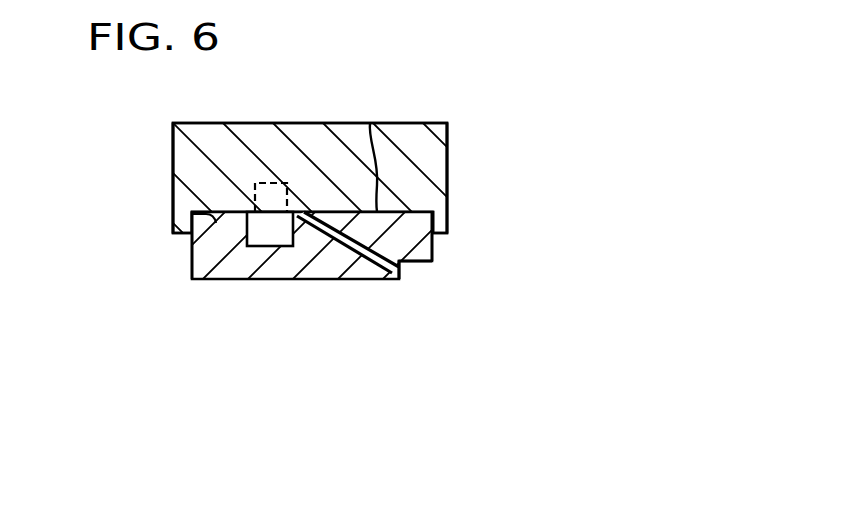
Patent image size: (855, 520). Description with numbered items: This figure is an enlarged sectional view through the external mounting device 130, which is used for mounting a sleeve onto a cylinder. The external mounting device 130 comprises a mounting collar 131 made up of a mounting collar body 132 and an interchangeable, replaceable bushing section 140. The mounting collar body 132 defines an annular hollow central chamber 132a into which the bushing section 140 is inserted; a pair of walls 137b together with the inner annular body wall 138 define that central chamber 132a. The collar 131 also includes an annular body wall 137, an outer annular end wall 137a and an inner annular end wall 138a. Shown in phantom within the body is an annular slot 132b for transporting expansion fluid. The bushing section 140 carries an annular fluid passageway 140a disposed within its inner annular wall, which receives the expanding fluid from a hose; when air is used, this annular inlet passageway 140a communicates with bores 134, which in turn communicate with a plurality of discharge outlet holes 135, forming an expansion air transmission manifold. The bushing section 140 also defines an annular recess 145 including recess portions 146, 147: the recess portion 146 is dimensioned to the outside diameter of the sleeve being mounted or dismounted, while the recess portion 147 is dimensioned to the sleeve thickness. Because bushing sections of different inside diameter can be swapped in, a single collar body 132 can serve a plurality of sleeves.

The external mounting device 130 is at (180, 376).
The mounting collar 131 is at (408, 107).
The mounting collar body 132 is at (260, 127).
The annular hollow central chamber 132a is at (188, 224).
The annular slot 132b is at (286, 183).
The bores 134 is at (338, 280).
The discharge outlet holes 135 is at (395, 274).
The annular body wall 137 is at (338, 127).
The outer annular end wall 137a is at (173, 172).
The walls 137b is at (192, 258).
The inner annular body wall 138 is at (373, 123).
The inner annular end wall 138a is at (448, 160).
The bushing section 140 is at (220, 270).
The annular fluid passageway 140a is at (278, 247).
The annular recess 145 is at (440, 290).
The recess portion 146 is at (425, 262).
The recess portion 147 is at (403, 262).